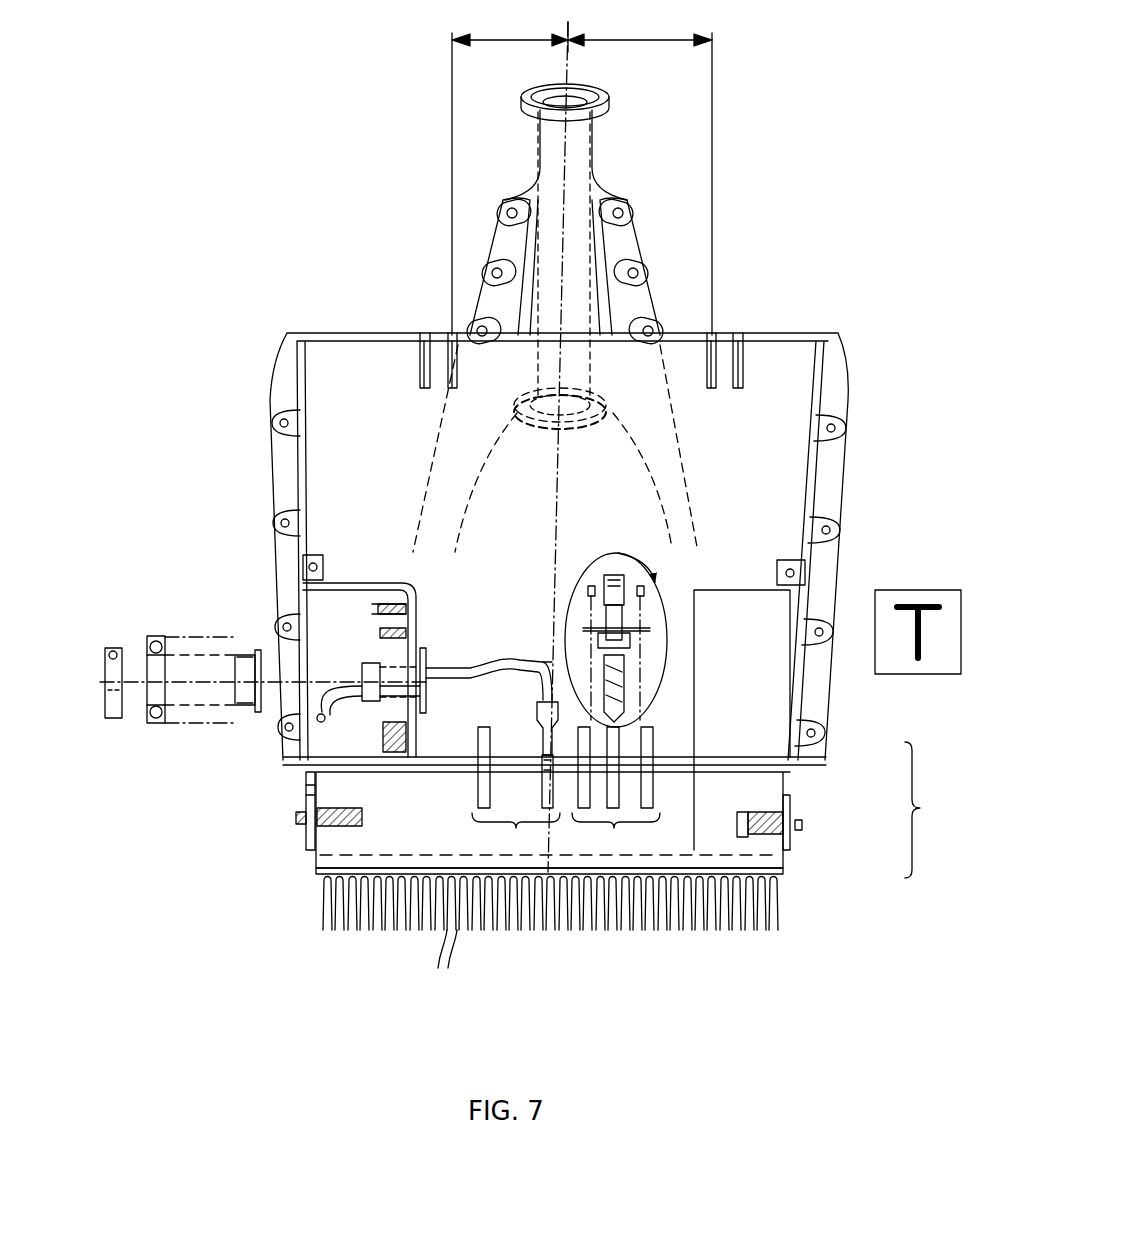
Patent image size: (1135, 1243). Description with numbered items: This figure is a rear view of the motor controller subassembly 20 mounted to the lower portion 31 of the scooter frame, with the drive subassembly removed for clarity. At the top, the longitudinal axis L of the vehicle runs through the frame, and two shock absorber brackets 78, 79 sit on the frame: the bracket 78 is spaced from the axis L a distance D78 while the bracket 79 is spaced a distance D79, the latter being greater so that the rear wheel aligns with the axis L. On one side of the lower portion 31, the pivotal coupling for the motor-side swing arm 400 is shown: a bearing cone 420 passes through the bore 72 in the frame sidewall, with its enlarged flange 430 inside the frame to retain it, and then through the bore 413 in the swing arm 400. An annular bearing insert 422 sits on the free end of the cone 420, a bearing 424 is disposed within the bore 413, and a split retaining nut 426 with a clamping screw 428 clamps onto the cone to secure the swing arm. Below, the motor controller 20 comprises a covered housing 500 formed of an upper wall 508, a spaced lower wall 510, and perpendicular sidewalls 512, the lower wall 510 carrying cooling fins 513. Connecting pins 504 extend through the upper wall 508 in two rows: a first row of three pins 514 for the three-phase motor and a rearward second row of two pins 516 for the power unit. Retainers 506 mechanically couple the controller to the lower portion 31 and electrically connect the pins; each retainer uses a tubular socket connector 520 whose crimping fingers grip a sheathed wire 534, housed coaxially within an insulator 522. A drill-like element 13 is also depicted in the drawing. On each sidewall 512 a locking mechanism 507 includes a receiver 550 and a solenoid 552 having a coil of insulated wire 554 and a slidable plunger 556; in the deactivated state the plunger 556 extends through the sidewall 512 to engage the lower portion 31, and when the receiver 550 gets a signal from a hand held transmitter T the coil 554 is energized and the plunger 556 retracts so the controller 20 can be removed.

The drill bit / tool 13 is at (672, 612).
The motor controller subassembly 20 is at (212, 812).
The lower portion 31 is at (843, 512).
The bore 72 is at (430, 676).
The bracket 78 is at (412, 358).
The bracket 79 is at (760, 358).
The motor-side swing arm 400 is at (386, 600).
The bore 413 is at (388, 625).
The bearing cone 420 is at (370, 672).
The bearing insert 422 is at (248, 655).
The bearing 424 is at (156, 726).
The split retaining nut 426 is at (113, 645).
The clamping screw 428 is at (115, 648).
The enlarged flange 430 is at (425, 655).
The covered housing 500 is at (308, 878).
The connecting pins 504 is at (660, 718).
The retainers 506 is at (664, 544).
The locking mechanism 507 is at (292, 810).
The upper wall 508 is at (553, 820).
The lower wall 510 is at (370, 858).
The sidewalls 512 is at (318, 860).
The cooling fins 513 is at (440, 969).
The first row of pins 514 is at (616, 792).
The second row of pins 516 is at (516, 792).
The socket connector 520 is at (540, 725).
The insulator 522 is at (545, 688).
The sheathed wire 534 is at (545, 700).
The receiver 550 is at (770, 855).
The solenoid 552 is at (755, 820).
The coil of insulated wire 554 is at (760, 812).
The slidable plunger 556 is at (805, 826).
The longitudinal axis L is at (566, 160).
The transmitter T is at (918, 632).
The distance D78 is at (582, 171).
The distance D79 is at (666, 171).